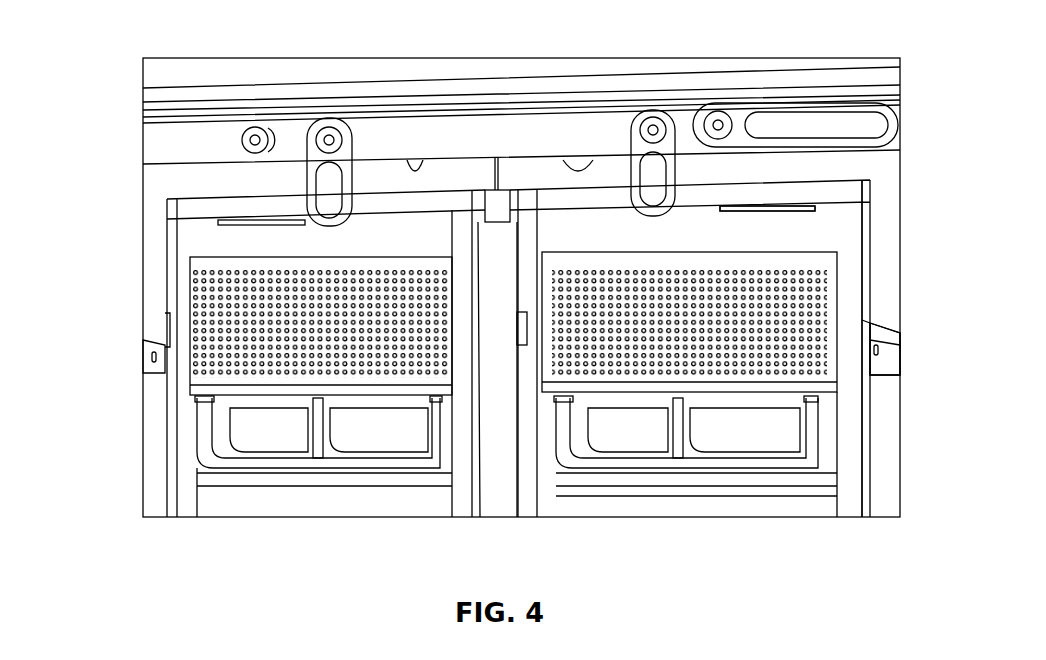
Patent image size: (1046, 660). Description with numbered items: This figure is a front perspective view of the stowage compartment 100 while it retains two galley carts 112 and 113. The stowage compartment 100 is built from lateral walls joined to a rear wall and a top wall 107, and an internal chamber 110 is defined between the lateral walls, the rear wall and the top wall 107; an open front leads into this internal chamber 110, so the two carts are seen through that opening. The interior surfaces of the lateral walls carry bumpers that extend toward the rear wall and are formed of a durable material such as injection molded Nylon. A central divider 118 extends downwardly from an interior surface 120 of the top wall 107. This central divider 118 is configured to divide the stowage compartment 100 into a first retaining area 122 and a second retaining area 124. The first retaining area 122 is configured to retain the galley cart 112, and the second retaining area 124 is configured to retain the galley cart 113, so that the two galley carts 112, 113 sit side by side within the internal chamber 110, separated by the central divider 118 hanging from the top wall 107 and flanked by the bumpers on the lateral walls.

The stowage compartment 100 is at (135, 197).
The top wall 107 is at (420, 166).
The internal chamber 110 is at (506, 500).
The galley cart 112 is at (268, 505).
The galley cart 113 is at (757, 494).
The central divider 118 is at (498, 197).
The interior surface 120 is at (594, 166).
The first retaining area 122 is at (242, 168).
The second retaining area 124 is at (834, 140).